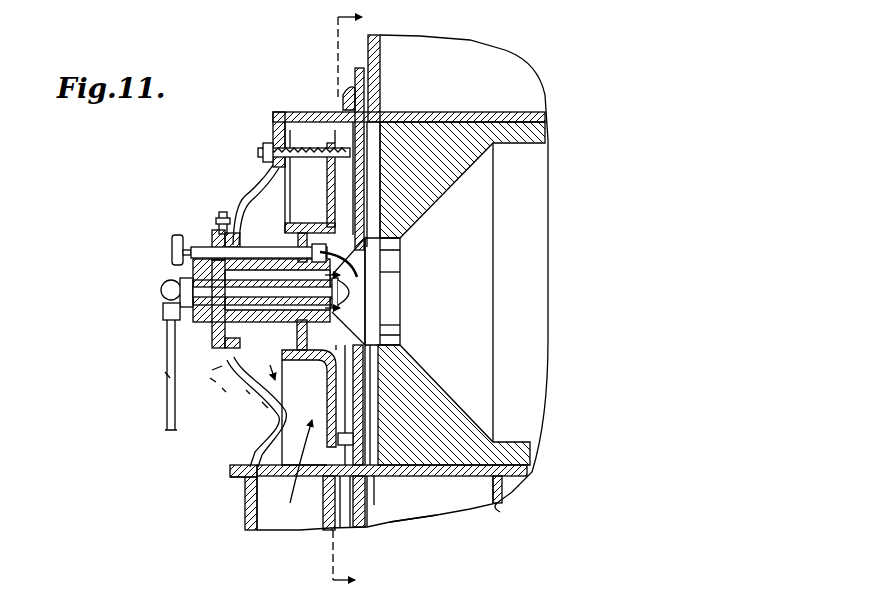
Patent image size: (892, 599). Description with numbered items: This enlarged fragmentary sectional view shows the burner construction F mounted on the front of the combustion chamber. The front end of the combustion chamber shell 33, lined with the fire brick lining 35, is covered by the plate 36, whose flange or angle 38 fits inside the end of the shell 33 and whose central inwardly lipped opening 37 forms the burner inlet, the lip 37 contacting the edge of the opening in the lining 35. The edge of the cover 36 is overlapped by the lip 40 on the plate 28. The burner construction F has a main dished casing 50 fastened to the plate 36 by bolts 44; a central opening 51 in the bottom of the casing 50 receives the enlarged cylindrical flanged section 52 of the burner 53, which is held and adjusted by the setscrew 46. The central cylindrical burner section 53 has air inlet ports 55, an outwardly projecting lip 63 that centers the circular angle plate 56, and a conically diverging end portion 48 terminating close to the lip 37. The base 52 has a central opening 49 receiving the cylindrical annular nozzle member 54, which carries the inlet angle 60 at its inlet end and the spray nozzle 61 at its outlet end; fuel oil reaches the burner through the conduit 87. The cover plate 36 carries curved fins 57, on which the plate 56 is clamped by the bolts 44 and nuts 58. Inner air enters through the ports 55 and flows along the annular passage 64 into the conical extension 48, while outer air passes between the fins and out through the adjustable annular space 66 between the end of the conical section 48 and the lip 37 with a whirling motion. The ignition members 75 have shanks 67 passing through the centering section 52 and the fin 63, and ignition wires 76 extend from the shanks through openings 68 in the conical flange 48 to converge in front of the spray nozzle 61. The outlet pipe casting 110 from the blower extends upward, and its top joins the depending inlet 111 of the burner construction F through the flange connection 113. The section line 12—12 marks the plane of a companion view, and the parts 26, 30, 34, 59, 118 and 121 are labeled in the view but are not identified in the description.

The section line 12- 12 is at (363, 300).
The housing wall 26 is at (368, 55).
The plate 28 is at (362, 528).
The lower housing portion 30 is at (468, 500).
The combustion chamber shell 33 is at (528, 468).
The inner housing wall 34 is at (508, 442).
The fire brick lining 35 is at (463, 218).
The cover plate 36 is at (356, 114).
The inwardly lipped opening 37 is at (384, 238).
The flange or angle 38 is at (370, 172).
The lip 40 is at (325, 512).
The bolts 44 is at (290, 118).
The setscrew 46 is at (216, 212).
The conically diverging end portion 48 is at (372, 328).
The central opening 49 is at (168, 322).
The main dished casing 50 is at (240, 176).
The central opening 51 is at (223, 390).
The cylindrical flanged section 52 is at (218, 372).
The central cylindrical burner section 53 is at (258, 260).
The cylindrical annular nozzle member 54 is at (215, 343).
The air inlet ports 55 is at (248, 392).
The circular angle plate 56 is at (300, 176).
The curved fins 57 is at (432, 142).
The nuts 58 is at (345, 96).
The bore line 59 is at (382, 325).
The inlet angle 60 is at (161, 291).
The spray nozzle 61 is at (360, 292).
The outwardly projecting lip 63 is at (311, 361).
The annular passage 64 is at (265, 404).
The adjustable annular space 66 is at (402, 252).
The shanks 67 is at (196, 245).
The openings 68 is at (386, 264).
The ignition members 75 is at (172, 249).
The ignition wires 76 is at (384, 272).
The conduit 87 is at (165, 372).
The burner construction F is at (213, 380).
The outlet pipe casting 110 is at (246, 514).
The depending inlet 111 is at (233, 470).
The flange connection 113 is at (233, 478).
The hook 118 is at (499, 507).
The vertical piece 121 is at (504, 492).